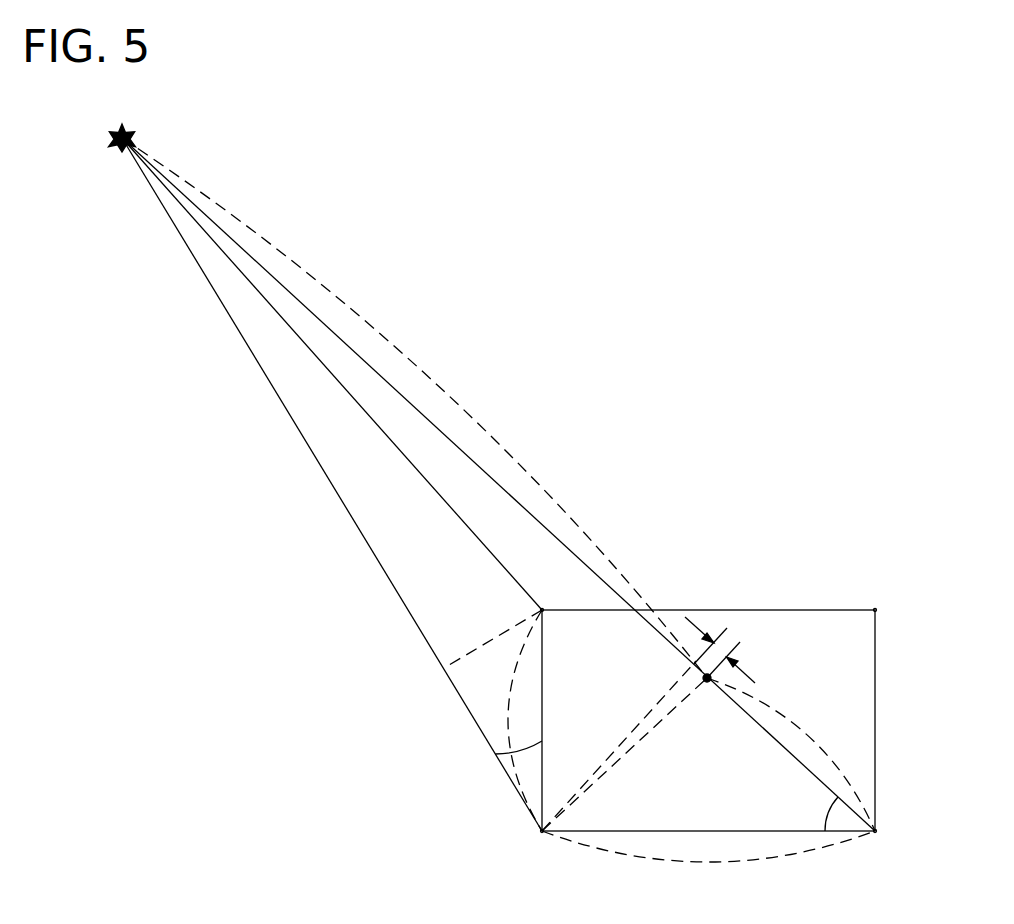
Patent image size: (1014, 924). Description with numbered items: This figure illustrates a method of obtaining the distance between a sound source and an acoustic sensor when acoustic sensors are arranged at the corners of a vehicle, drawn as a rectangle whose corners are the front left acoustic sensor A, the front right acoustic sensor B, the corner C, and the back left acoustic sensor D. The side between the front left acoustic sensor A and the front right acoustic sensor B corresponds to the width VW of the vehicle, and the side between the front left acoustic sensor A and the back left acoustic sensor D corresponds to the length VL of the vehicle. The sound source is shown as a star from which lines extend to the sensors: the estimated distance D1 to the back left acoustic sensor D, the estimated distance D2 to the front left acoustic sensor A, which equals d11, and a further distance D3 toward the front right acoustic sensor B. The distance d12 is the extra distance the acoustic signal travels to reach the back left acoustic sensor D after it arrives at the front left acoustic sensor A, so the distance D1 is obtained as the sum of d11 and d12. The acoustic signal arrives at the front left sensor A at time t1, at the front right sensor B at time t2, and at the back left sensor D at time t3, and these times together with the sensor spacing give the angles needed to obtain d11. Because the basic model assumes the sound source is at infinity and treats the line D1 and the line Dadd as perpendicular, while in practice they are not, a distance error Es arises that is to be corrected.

The estimated distance between the sound source and the back left (D) acoustic senso D1 is at (498, 484).
The estimated distance between the sound source and the front left (A) acoustic sens D2 is at (332, 484).
The distance from light source to point B D3 is at (332, 374).
The distance between the sound source and the front left acoustic sensor d11 is at (414, 408).
The additional travel distance to the back left acoustic sensor d12 is at (791, 754).
The distance error Es is at (731, 650).
The Dadd line Dadd is at (665, 715).
The width of the vehicle VW is at (493, 720).
The length of the vehicle VL is at (708, 855).
The front left acoustic sensor A is at (559, 851).
The front right acoustic sensor B is at (514, 598).
The corner point C of sensing region C is at (893, 591).
The back left acoustic sensor D is at (892, 851).
The arrival time at the front left acoustic sensor t1 is at (516, 860).
The arrival time at the front right acoustic sensor t2 is at (544, 577).
The arrival time at the back left acoustic sensor t3 is at (815, 860).